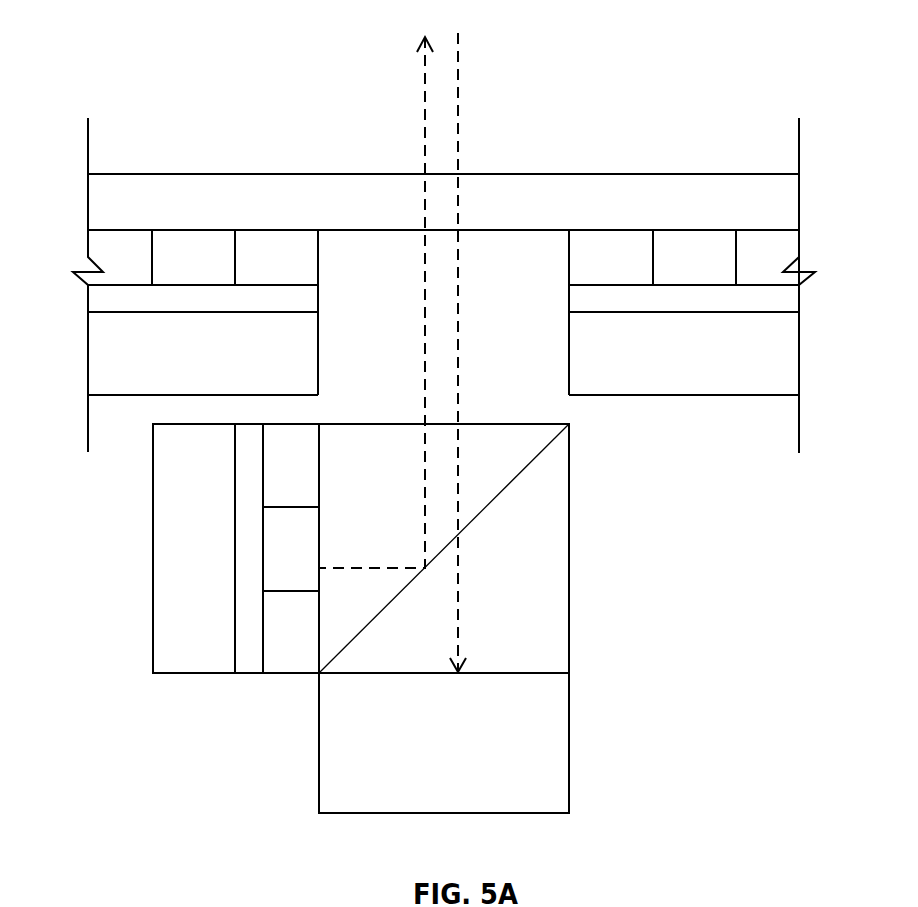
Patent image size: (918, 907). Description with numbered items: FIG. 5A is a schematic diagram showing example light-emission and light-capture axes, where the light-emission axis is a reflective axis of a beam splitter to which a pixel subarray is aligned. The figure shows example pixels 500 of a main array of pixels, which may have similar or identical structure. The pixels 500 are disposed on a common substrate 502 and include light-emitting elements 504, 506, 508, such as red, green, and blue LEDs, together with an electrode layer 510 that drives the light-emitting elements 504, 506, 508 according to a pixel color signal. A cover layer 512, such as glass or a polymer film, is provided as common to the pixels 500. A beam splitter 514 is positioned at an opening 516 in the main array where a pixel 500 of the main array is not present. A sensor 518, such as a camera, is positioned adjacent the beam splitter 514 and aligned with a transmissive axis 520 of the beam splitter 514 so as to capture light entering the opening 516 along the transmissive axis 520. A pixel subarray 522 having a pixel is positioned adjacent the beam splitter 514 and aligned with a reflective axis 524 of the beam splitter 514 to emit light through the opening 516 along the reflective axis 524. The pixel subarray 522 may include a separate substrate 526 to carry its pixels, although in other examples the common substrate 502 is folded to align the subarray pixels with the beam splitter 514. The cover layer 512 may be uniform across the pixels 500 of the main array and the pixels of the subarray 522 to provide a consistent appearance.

The pixels 500 is at (127, 411).
The common substrate 502 is at (130, 353).
The light-emitting element 504 is at (601, 268).
The light-emitting element 506 is at (692, 263).
The light-emitting element 508 is at (764, 252).
The electrode layer 510 is at (630, 302).
The cover layer 512 is at (274, 203).
The beam splitter 514 is at (587, 634).
The opening 516 is at (510, 295).
The sensor 518 is at (533, 781).
The transmissive axis 520 is at (479, 352).
The pixel subarray 522 is at (262, 703).
The reflective axis 524 is at (376, 302).
The separate substrate 526 is at (185, 662).